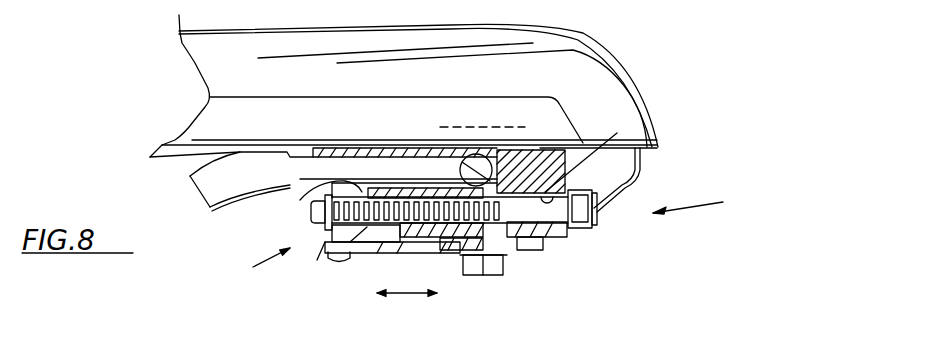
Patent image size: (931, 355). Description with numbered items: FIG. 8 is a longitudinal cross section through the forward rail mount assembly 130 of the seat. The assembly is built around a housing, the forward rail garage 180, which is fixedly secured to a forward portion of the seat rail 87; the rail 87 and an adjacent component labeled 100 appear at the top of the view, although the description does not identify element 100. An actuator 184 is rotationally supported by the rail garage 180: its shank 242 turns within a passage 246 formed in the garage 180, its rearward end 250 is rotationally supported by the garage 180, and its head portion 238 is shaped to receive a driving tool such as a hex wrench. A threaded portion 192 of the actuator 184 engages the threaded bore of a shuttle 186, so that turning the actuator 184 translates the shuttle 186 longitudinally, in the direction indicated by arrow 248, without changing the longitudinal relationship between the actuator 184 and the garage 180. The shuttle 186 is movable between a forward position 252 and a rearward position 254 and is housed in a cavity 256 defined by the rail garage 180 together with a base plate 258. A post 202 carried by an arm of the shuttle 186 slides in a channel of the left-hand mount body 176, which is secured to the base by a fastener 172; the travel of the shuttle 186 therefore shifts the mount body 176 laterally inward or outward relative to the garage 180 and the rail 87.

The housing 100 is at (613, 58).
The rail 87 is at (242, 182).
The threaded portion 192 is at (305, 195).
The cavity 256 is at (512, 178).
The rail garage 180 is at (547, 162).
The passage 246 is at (617, 133).
The left hand mount body 176 is at (640, 173).
The actuator 184 is at (597, 190).
The forward rail mount assembly 130 is at (710, 206).
The head portion 238 is at (580, 230).
The shank 242 is at (550, 233).
The forward position 252 is at (497, 250).
The post 202 is at (487, 277).
The shuttle 186 is at (405, 227).
The rearward position 254 is at (373, 250).
The fastener 172 is at (353, 257).
The base plate 258 is at (325, 243).
The rearward end 250 is at (242, 264).
The arrow 248 is at (413, 295).